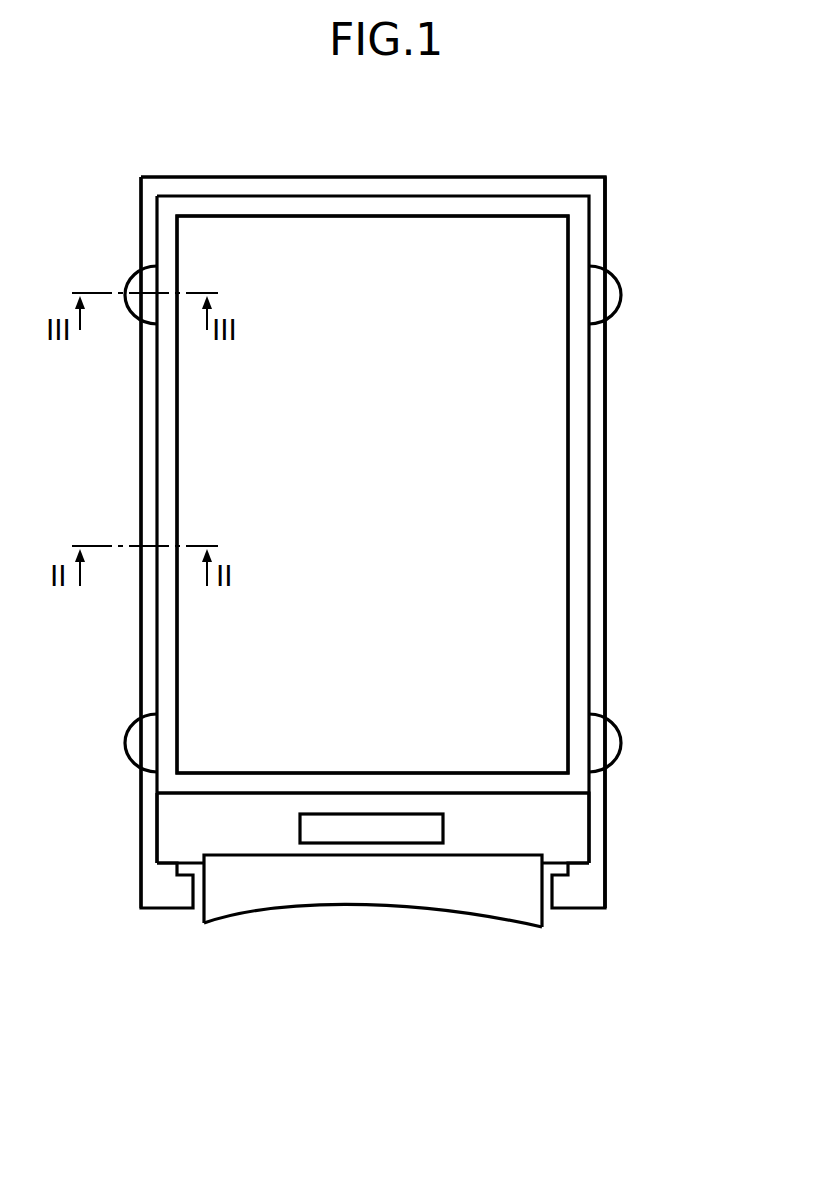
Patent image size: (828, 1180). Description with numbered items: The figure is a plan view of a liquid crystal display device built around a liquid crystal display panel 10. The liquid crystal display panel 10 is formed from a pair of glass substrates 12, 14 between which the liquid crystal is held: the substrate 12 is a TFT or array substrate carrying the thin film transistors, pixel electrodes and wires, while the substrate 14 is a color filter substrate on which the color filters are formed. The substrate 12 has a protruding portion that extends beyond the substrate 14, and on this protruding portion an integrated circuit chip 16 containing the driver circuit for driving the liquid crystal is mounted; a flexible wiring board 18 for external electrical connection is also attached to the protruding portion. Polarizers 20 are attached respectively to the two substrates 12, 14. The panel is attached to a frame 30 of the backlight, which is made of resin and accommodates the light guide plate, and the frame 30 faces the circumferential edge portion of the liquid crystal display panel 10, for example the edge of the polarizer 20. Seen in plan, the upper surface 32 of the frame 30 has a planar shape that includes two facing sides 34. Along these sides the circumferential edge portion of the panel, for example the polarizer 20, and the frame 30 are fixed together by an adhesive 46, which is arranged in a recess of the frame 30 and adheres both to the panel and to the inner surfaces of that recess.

The liquid crystal display panel 10 is at (598, 531).
The substrate 12 is at (578, 828).
The substrate 14 is at (580, 628).
The integrated circuit chip 16 is at (367, 828).
The flexible wiring board 18 is at (502, 908).
The polarizer 20 is at (555, 590).
The frame 30 is at (605, 402).
The upper surface 32 is at (595, 457).
The side 34 is at (140, 386).
The adhesive 46 is at (137, 283).